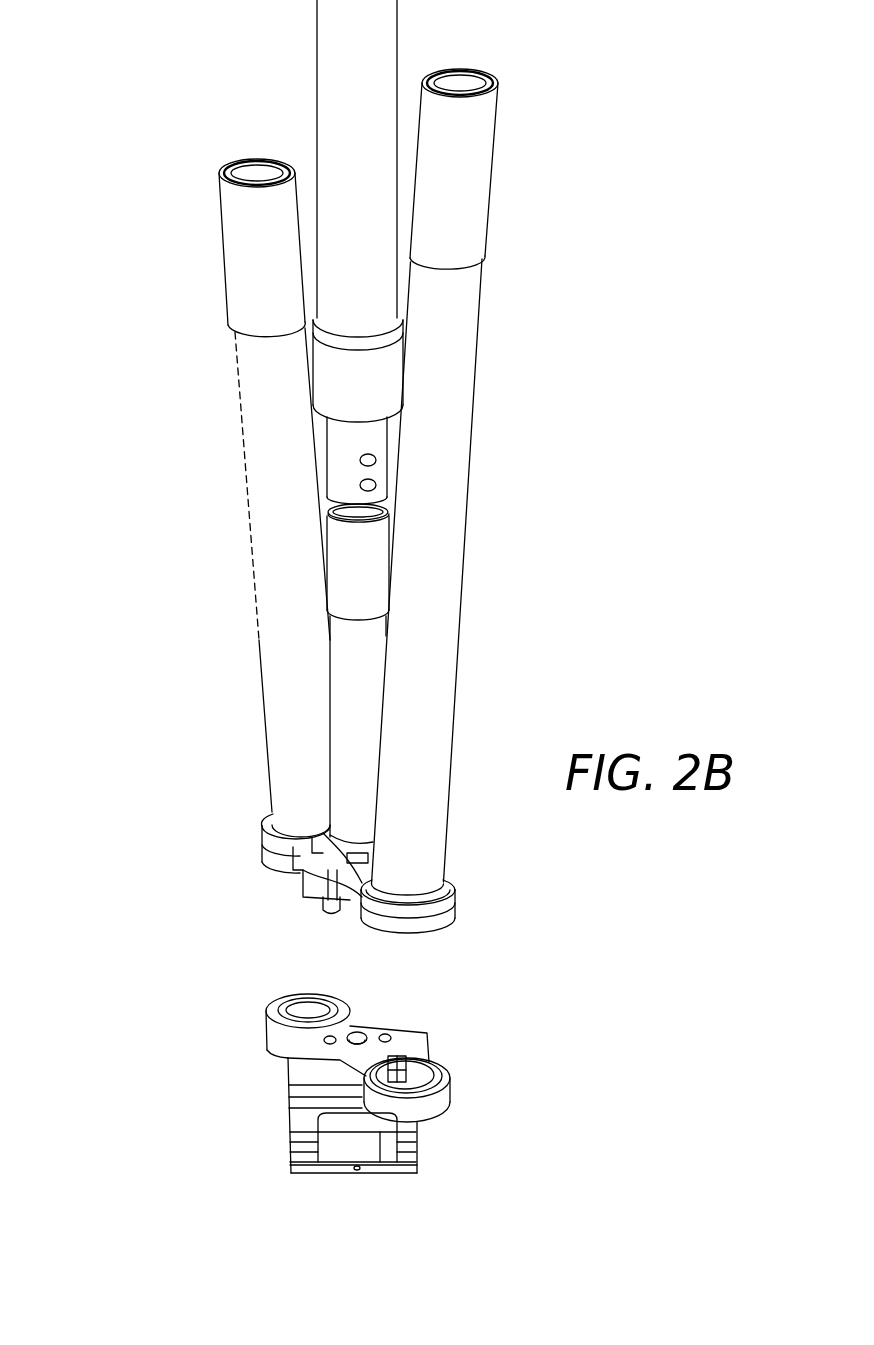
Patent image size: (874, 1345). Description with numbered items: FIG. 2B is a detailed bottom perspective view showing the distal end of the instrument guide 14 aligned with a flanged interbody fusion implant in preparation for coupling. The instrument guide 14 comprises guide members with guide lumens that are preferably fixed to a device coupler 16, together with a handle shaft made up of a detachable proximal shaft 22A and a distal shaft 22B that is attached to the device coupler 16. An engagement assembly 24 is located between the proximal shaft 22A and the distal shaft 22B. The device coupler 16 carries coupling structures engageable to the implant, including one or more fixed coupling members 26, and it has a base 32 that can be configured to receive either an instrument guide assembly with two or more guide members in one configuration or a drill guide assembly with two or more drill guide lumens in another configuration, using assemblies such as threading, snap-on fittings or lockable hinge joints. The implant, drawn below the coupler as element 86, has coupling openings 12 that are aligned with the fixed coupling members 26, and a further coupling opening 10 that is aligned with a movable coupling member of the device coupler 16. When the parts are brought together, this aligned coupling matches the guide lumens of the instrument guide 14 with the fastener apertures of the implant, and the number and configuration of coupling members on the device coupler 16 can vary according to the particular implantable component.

The coupling opening 10 is at (360, 1040).
The coupling openings 12 is at (327, 1040).
The instrument guide 14 is at (395, 586).
The device coupler 16 is at (488, 912).
The proximal shaft 22A is at (346, 40).
The distal shaft 22B is at (363, 672).
The engagement assembly 24 is at (280, 505).
The fixed coupling members 26 is at (330, 907).
The base 32 is at (312, 880).
The base plate 86 is at (488, 1088).